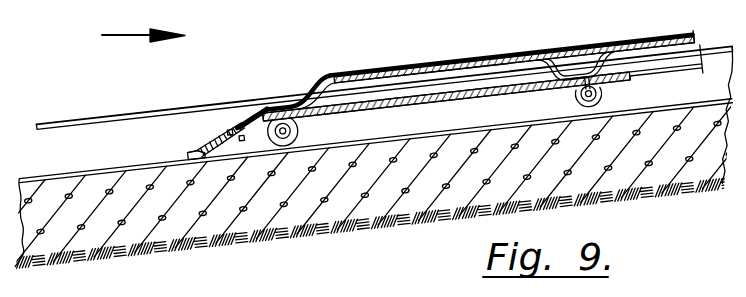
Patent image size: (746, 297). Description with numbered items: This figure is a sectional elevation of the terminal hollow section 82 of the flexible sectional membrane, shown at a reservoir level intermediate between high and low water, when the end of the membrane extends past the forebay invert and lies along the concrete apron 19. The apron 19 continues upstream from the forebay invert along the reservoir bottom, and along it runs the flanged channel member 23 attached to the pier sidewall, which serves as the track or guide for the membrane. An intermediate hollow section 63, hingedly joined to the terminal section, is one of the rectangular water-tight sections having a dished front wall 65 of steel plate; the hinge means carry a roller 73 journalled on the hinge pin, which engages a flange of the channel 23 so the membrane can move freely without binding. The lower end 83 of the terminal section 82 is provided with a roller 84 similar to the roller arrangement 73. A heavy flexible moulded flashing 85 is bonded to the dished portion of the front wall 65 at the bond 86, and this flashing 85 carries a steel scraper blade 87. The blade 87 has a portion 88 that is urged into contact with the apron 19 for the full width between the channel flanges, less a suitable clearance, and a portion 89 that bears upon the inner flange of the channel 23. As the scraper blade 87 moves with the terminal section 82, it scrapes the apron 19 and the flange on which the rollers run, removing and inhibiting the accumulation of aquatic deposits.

The apron 19 is at (117, 166).
The channel member 23 is at (83, 118).
The intermediate hollow section 63 is at (680, 38).
The dished front wall 65 is at (434, 72).
The roller 73 is at (590, 108).
The terminal hollow section 82 is at (452, 58).
The lower end 83 is at (271, 108).
The roller 84 is at (293, 140).
The flexible moulded flashing 85 is at (305, 92).
The bond 86 is at (369, 77).
The steel scraper blade 87 is at (216, 143).
The apron-contacting portion 88 is at (202, 160).
The flange-bearing portion 89 is at (192, 150).